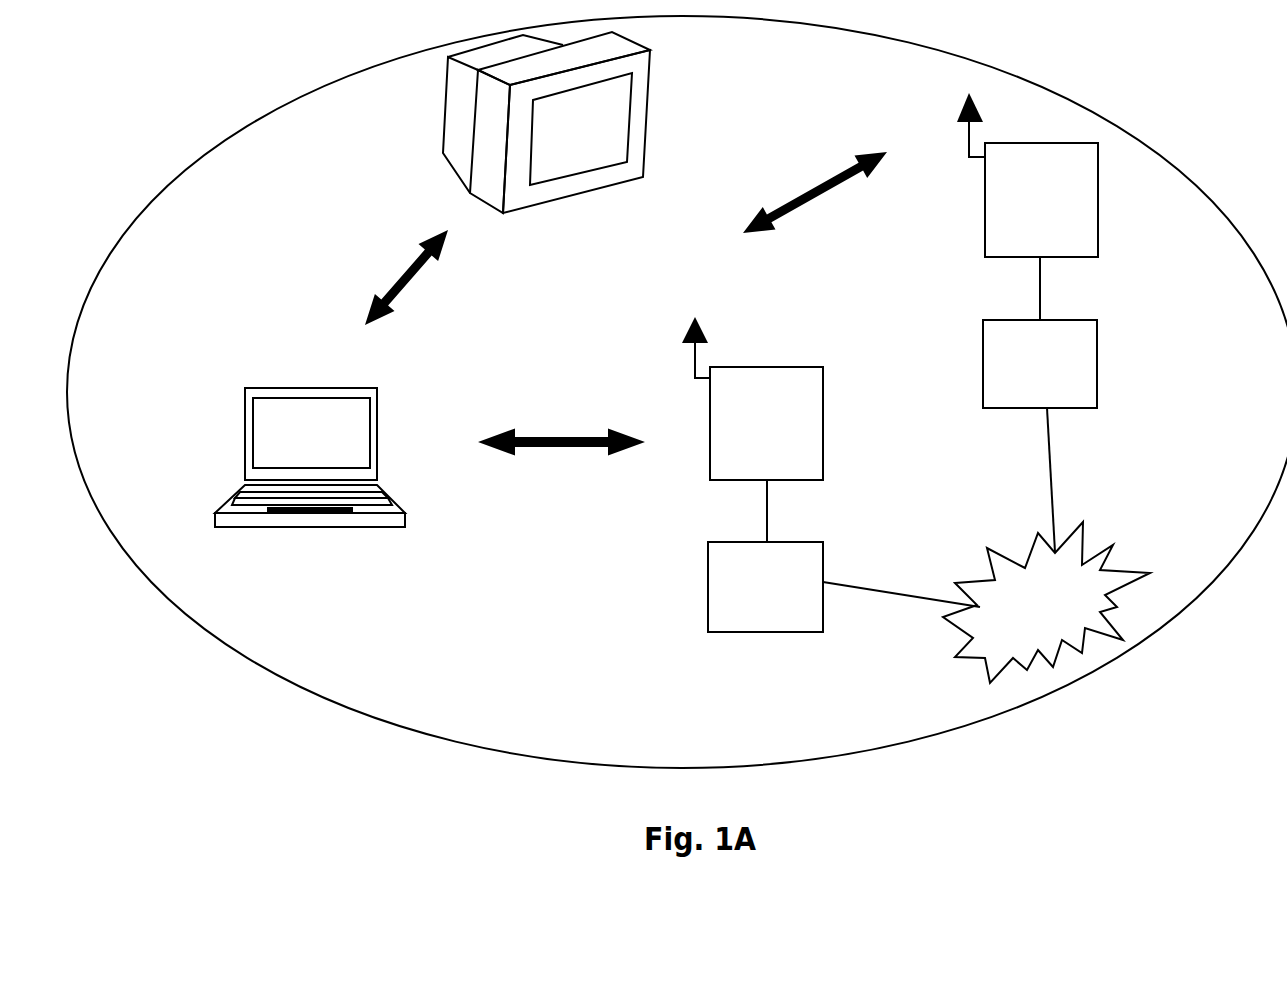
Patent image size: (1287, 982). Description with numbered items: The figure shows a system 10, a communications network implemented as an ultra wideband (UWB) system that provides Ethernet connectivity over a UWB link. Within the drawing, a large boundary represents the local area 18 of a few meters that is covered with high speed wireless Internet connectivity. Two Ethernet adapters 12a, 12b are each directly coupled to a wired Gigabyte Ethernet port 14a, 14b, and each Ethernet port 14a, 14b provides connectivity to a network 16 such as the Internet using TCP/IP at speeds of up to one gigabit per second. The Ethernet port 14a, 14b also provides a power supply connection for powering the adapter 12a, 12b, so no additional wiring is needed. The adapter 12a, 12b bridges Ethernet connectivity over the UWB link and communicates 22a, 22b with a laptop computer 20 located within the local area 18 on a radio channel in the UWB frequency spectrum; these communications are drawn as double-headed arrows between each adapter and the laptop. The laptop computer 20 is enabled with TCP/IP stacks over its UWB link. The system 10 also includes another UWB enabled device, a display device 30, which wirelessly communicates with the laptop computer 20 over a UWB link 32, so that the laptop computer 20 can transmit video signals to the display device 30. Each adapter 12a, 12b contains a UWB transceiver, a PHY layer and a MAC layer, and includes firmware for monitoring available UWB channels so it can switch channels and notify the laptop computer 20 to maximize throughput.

The system 10 is at (240, 292).
The Ethernet adapter 12a is at (783, 367).
The Ethernet adapter 12b is at (1098, 222).
The Ethernet port 14a is at (823, 553).
The Ethernet port 14b is at (1098, 367).
The network 16 is at (1083, 530).
The local area 18 is at (165, 592).
The laptop computer 20 is at (380, 415).
The communication 22a is at (533, 433).
The communication 22b is at (812, 203).
The display device 30 is at (648, 98).
The UWB link 32 is at (403, 265).